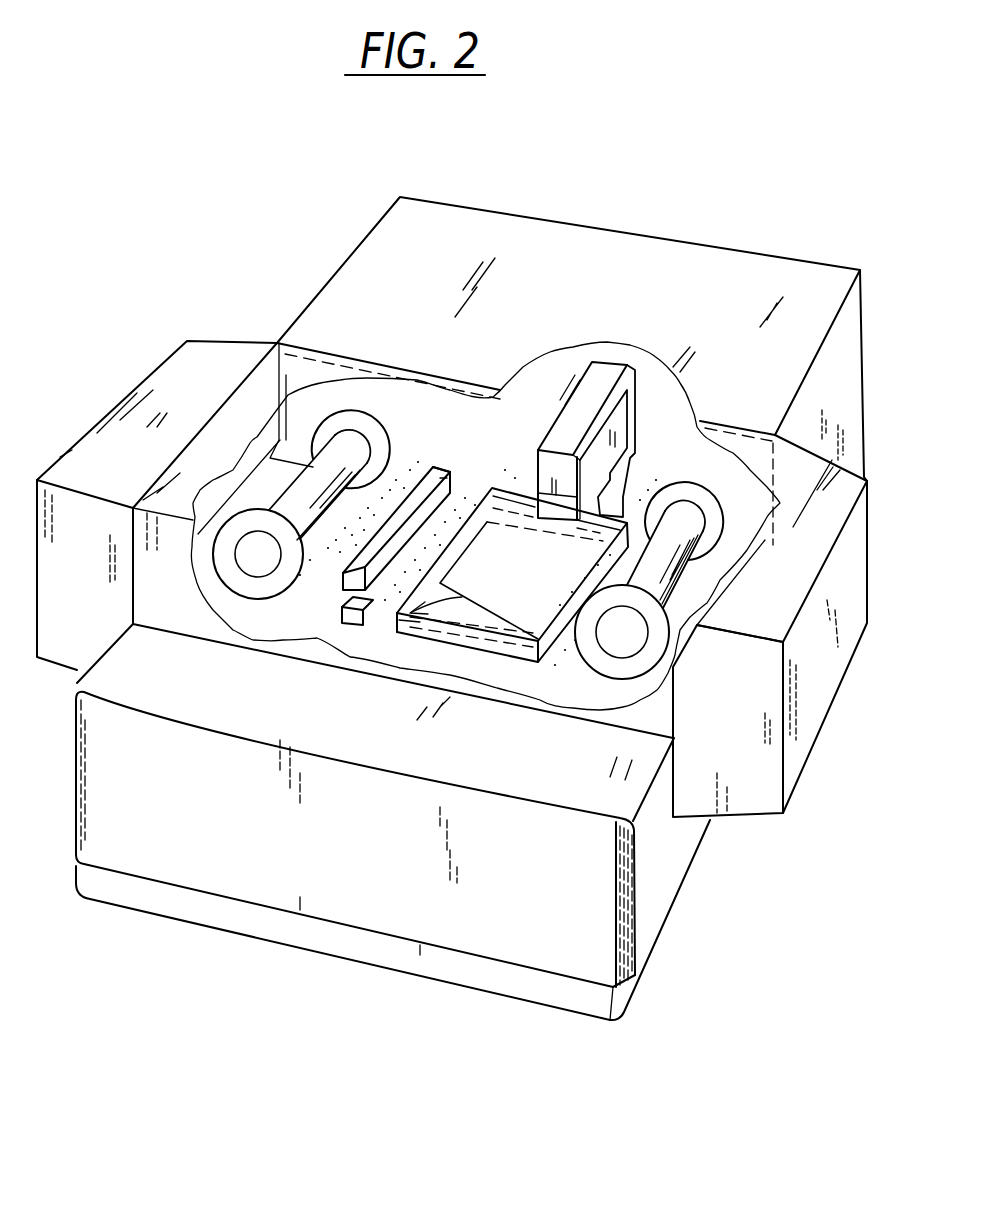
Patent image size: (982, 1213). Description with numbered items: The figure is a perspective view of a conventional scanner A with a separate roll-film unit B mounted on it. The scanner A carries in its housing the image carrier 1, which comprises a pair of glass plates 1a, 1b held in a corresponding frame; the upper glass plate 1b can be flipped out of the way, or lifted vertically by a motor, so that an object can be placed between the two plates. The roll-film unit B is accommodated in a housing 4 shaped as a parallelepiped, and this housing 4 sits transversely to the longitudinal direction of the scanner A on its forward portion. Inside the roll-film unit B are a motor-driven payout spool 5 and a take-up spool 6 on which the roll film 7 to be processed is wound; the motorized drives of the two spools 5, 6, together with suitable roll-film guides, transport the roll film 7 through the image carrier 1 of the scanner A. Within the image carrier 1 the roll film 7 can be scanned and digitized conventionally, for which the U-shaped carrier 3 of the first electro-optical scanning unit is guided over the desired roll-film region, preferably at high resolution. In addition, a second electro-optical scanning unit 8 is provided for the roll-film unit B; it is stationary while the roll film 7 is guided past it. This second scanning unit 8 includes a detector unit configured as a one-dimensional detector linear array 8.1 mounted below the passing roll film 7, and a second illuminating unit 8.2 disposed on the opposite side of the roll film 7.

The image carrier 1 is at (437, 648).
The glass plate 1a is at (545, 647).
The upper glass plate 1b is at (402, 658).
The U-shaped carrier 3 is at (542, 418).
The housing 4 is at (752, 797).
The payout spool 5 is at (247, 583).
The take-up spool 6 is at (613, 663).
The roll film 7 is at (322, 593).
The second electro-optical scanning unit 8 is at (442, 457).
The detector linear array 8.1 is at (350, 622).
The second illuminating unit 8.2 is at (423, 482).
The scanner A is at (200, 942).
The roll-film unit B is at (152, 327).